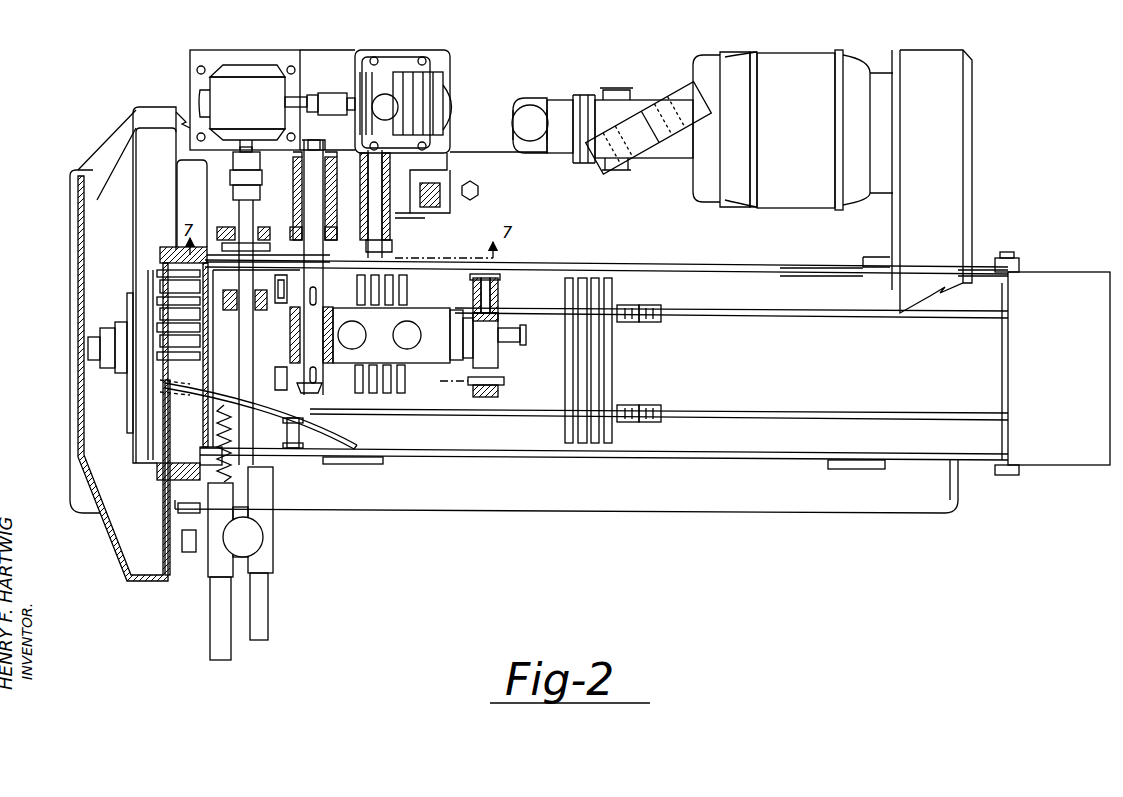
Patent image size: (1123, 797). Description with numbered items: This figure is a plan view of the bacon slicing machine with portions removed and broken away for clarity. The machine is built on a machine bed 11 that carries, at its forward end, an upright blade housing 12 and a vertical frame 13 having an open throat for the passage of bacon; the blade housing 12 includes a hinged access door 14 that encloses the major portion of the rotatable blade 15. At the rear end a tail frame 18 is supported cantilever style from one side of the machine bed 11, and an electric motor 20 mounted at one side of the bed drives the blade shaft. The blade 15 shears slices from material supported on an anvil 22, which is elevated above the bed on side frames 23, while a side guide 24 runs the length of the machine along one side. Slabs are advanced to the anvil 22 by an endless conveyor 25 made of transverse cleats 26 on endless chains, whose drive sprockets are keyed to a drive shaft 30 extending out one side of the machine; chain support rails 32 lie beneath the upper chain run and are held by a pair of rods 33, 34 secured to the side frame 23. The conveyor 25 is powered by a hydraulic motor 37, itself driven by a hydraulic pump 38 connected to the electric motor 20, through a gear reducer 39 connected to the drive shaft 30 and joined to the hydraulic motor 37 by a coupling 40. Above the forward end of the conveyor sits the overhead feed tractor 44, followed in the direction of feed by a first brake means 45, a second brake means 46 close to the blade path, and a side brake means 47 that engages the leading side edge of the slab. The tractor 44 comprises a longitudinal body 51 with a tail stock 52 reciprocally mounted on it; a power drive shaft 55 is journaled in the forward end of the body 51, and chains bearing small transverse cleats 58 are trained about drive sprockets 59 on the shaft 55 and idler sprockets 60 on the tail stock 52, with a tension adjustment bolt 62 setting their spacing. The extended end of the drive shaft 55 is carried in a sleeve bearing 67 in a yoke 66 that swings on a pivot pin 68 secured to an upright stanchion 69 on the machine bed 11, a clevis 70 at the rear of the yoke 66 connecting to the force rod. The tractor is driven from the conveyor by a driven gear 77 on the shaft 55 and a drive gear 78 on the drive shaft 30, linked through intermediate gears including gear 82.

The machine bed 11 is at (905, 513).
The blade housing 12 is at (148, 140).
The vertical frame 13 is at (170, 580).
The hinged access door 14 is at (75, 425).
The rotatable blade 15 is at (145, 457).
The tail frame 18 is at (970, 145).
The electric motor 20 is at (798, 52).
The anvil 22 is at (175, 470).
The side frames 23 is at (310, 465).
The side guide 24 is at (535, 265).
The endless conveyor 25 is at (612, 358).
The transverse cleats 26 is at (576, 445).
The drive shaft 30 is at (225, 200).
The chain support rails 32 is at (830, 410).
The rod 33 is at (300, 430).
The rod 34 is at (985, 352).
The hydraulic motor 37 is at (440, 85).
The hydraulic pump 38 is at (560, 95).
The gear reducer 39 is at (222, 60).
The coupling 40 is at (332, 93).
The overhead feed tractor 44 is at (458, 284).
The first brake means 45 is at (150, 388).
The second brake means 46 is at (150, 333).
The side brake means 47 is at (195, 402).
The longitudinal body 51 is at (393, 360).
The tail stock 52 is at (498, 360).
The power drive shaft 55 is at (304, 200).
The transverse cleats 58 is at (395, 305).
The drive sprockets 59 is at (320, 390).
The idler sprockets 60 is at (500, 290).
The tension adjustment bolt 62 is at (526, 335).
The yoke 66 is at (425, 218).
The sleeve bearing 67 is at (293, 170).
The pivot pin 68 is at (323, 185).
The upright stanchion 69 is at (400, 150).
The clevis 70 is at (445, 182).
The driven gear 77 is at (290, 233).
The drive gear 78 is at (225, 250).
The intermediate gear 82 is at (395, 252).